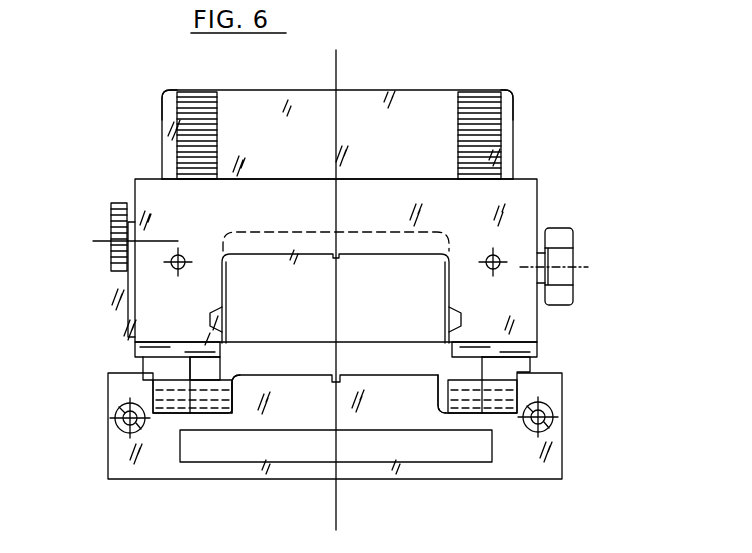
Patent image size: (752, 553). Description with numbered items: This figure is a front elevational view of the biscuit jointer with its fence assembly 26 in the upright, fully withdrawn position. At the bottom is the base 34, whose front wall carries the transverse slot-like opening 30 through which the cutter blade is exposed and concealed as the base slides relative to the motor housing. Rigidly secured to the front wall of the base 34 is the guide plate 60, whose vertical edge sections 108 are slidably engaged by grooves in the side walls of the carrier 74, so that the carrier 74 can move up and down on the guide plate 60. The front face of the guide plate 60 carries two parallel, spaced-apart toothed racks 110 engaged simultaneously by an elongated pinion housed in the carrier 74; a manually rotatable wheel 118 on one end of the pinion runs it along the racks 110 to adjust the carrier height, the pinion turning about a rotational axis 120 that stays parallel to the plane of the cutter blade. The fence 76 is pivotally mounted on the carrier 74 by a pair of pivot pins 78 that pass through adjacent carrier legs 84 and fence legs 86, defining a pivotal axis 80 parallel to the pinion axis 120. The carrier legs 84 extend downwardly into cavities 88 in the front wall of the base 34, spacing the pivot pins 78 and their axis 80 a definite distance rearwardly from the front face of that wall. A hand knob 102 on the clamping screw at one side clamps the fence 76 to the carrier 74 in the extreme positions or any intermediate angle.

The fence assembly 26 is at (542, 181).
The slot-like opening 30 is at (232, 444).
The base 34 is at (108, 438).
The guide plate 60 is at (363, 90).
The carrier 74 is at (130, 311).
The fence 76 is at (150, 195).
The pivot pins 78 is at (228, 332).
The pivotal axis 80 is at (176, 342).
The carrier legs 84 is at (172, 415).
The fence legs 86 is at (214, 378).
The cavities 88 is at (232, 378).
The hand knob 102 is at (573, 243).
The vertical edge sections 108 is at (167, 130).
The toothed racks 110 is at (217, 151).
The manually rotatable wheel 118 is at (112, 223).
The rotational axis of the pinion 120 is at (158, 240).